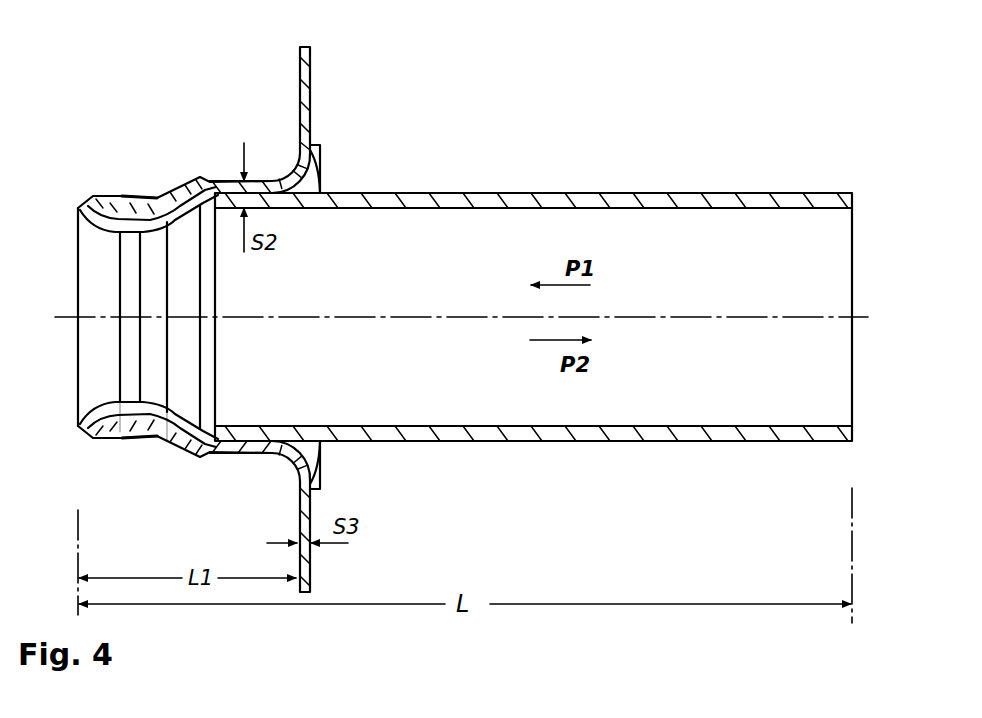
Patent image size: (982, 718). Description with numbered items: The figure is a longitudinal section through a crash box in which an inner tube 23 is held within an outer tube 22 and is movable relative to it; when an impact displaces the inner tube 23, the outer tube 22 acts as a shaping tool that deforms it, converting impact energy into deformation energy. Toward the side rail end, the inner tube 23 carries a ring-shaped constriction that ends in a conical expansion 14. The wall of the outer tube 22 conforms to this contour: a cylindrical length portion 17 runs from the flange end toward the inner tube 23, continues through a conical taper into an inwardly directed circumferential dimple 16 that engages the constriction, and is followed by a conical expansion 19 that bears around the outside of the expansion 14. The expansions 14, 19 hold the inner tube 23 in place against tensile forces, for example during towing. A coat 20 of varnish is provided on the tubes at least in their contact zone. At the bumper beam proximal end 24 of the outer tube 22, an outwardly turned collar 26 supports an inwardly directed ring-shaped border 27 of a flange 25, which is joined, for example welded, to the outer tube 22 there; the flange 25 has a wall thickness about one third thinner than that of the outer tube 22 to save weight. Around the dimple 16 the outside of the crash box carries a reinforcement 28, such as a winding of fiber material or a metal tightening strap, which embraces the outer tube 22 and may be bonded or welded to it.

The conical expansion 14 is at (82, 232).
The circumferential dimple 16 is at (137, 190).
The cylindrical length portion 17 is at (245, 453).
The conical expansion 19 is at (108, 438).
The coat of varnish 20 is at (131, 432).
The outer tube 22 is at (202, 122).
The inner tube 23 is at (532, 192).
The bumper beam proximal end 24 is at (412, 82).
The flange 25 is at (310, 90).
The outwardly turned collar 26 is at (321, 152).
The ring-shaped border 27 is at (285, 165).
The reinforcement 28 is at (161, 446).